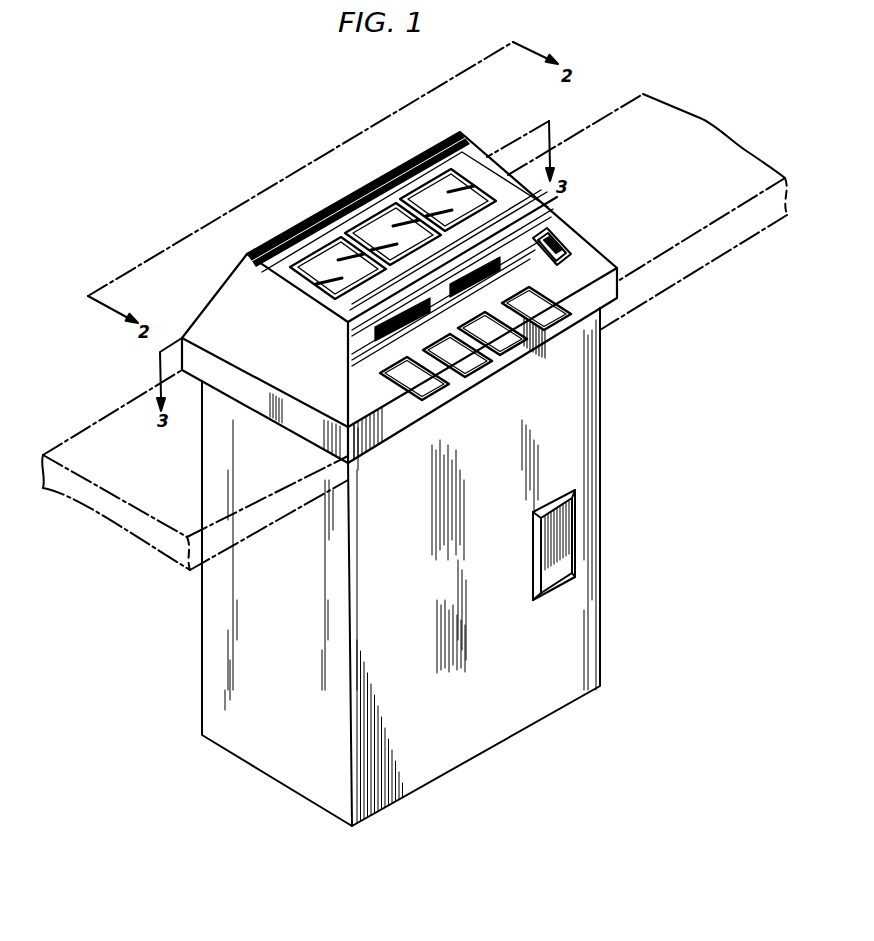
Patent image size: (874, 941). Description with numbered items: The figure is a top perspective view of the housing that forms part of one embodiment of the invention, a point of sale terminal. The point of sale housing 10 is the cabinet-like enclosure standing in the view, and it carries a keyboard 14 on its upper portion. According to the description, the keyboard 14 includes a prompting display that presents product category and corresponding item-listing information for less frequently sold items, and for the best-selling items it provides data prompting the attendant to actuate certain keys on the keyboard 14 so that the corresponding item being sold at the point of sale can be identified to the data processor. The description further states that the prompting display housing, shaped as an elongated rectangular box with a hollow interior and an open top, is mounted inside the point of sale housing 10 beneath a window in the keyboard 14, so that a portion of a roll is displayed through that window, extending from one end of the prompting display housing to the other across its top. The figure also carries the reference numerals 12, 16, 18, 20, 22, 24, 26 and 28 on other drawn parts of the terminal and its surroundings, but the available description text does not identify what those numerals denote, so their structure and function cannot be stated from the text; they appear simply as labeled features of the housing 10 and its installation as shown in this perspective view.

The point of sale housing 10 is at (570, 445).
The counter 12 is at (665, 270).
The keyboard 14 is at (210, 303).
The card slots 16 is at (448, 365).
The cards 18 is at (405, 373).
The display windows 20 is at (318, 258).
The slot 22 is at (380, 333).
The slot 24 is at (497, 263).
The card slot 26 is at (561, 238).
The opening 28 is at (555, 554).